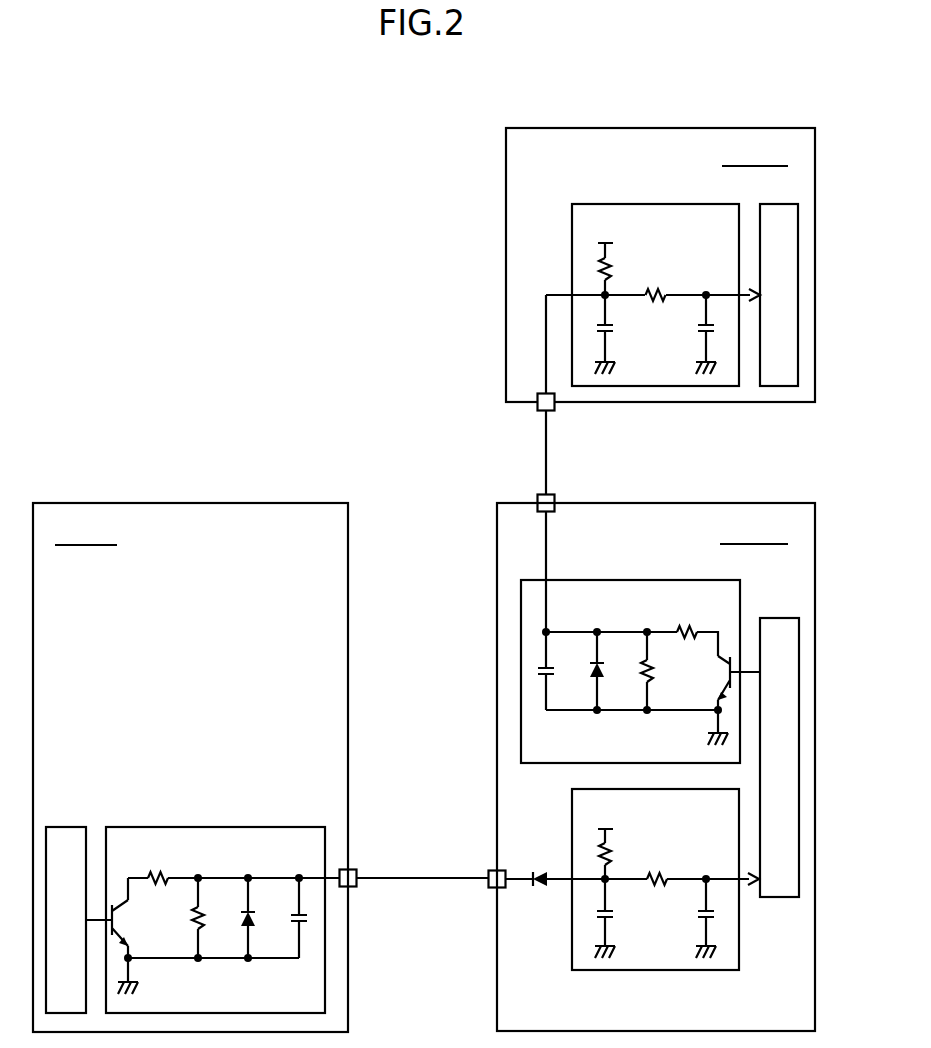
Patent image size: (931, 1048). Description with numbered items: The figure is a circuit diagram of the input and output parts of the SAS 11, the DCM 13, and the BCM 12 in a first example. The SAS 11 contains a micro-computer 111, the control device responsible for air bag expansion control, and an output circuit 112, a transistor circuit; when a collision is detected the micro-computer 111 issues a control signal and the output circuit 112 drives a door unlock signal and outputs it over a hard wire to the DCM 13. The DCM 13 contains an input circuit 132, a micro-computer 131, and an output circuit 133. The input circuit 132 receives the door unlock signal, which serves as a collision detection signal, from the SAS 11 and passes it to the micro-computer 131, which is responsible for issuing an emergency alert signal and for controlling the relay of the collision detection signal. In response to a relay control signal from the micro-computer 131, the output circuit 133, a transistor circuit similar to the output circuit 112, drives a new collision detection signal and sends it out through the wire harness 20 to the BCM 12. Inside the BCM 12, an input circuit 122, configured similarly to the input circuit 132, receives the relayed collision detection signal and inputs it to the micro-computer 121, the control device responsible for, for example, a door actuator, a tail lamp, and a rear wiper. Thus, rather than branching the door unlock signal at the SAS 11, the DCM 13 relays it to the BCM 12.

The SAS 11 is at (193, 501).
The BCM 12 is at (580, 127).
The DCM 13 is at (711, 501).
The wire harness 20 is at (544, 436).
The micro-computer 111 is at (65, 825).
The output circuit 112 is at (211, 825).
The micro-computer 121 is at (779, 388).
The input circuit 122 is at (614, 203).
The micro-computer 131 is at (778, 899).
The input circuit 132 is at (651, 972).
The output circuit 133 is at (614, 579).